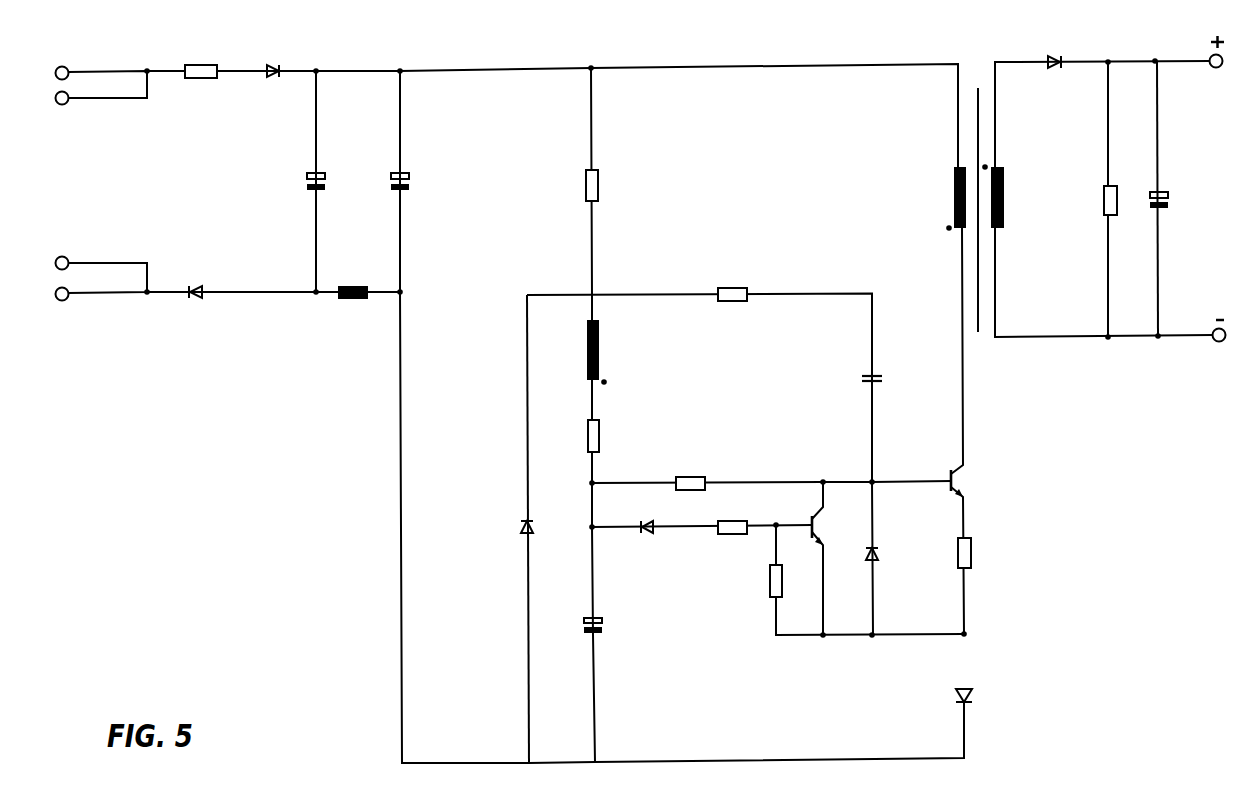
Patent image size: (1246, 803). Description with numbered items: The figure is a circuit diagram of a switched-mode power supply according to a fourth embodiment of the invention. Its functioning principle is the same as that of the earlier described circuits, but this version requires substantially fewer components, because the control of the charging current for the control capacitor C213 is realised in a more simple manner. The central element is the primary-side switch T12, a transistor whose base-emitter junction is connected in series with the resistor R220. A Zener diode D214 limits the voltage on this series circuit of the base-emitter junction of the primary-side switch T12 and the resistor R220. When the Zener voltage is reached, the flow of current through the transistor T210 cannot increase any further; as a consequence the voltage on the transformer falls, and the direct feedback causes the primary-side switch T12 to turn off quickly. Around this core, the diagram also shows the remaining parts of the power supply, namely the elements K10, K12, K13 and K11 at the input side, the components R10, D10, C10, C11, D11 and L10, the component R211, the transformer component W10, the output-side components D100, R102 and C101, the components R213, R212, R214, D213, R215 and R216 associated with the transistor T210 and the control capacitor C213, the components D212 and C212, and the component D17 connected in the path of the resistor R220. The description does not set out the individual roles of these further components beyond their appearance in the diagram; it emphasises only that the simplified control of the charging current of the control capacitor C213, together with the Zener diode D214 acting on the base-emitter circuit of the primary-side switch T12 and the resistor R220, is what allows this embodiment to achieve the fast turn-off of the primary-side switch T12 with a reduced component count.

The input terminal K10 is at (73, 57).
The input terminal K12 is at (77, 114).
The input terminal K13 is at (73, 250).
The input terminal K11 is at (75, 310).
The resistor R10 is at (205, 62).
The diode D10 is at (282, 61).
The capacitor C10 is at (307, 173).
The capacitor C11 is at (391, 173).
The diode D11 is at (204, 282).
The inductor L10 is at (355, 283).
The resistor R211 is at (582, 174).
The transformer W10 is at (799, 269).
The rectifier diode D100 is at (1063, 51).
The resistor R102 is at (1101, 193).
The output capacitor C101 is at (1149, 191).
The resistor R213 is at (742, 285).
The control capacitor C213 is at (863, 363).
The resistor R212 is at (581, 441).
The resistor R214 is at (700, 475).
The diode D213 is at (661, 517).
The resistor R215 is at (742, 517).
The resistor R216 is at (767, 570).
The transistor T210 is at (839, 530).
The diode D212 is at (517, 514).
The Zener diode D214 is at (864, 575).
The capacitor C212 is at (584, 611).
The primary-side switch T12 is at (977, 480).
The resistor R220 is at (955, 542).
The diode D17 is at (955, 689).